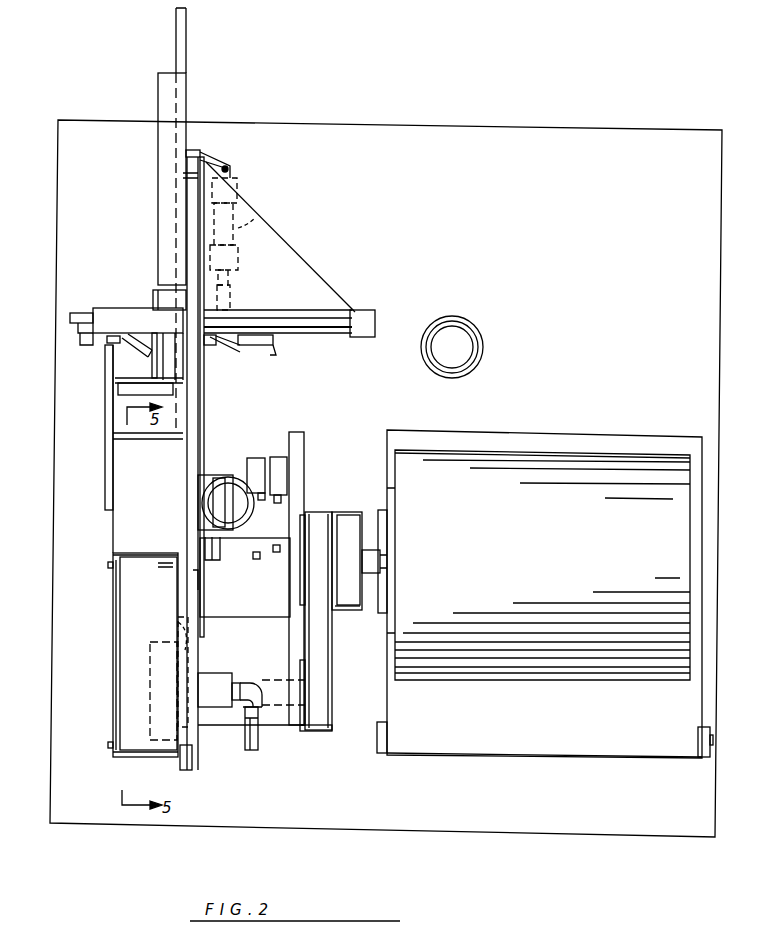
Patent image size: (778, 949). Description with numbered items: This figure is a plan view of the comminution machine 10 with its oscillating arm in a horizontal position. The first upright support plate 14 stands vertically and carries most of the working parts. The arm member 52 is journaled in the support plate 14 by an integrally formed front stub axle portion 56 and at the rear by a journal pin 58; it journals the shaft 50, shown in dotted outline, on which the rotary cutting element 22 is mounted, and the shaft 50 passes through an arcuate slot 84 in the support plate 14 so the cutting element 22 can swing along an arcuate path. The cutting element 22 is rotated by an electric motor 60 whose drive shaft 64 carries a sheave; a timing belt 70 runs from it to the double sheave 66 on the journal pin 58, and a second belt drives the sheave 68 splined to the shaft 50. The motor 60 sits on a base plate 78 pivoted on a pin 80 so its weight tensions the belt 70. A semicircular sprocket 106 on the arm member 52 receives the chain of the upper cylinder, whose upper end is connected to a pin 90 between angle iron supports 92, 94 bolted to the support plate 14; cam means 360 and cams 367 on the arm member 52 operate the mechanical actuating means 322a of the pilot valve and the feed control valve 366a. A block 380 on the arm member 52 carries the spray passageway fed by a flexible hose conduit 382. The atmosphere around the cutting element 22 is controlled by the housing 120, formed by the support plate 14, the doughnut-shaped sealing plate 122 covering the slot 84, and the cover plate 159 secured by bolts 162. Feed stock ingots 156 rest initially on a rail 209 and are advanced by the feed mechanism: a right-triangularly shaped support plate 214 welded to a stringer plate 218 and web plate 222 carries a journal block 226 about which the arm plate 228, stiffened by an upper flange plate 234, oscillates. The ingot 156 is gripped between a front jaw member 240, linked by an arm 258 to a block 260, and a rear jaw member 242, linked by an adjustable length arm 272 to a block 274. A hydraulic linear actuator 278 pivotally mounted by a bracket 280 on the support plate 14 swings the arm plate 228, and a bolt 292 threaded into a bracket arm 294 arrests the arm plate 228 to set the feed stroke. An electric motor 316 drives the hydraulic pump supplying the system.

The comminution machine 10 is at (80, 100).
The feed stock ingots 156 is at (188, 42).
The rail 209 is at (160, 163).
The first upright support plate 14 is at (192, 208).
The doughnut-shaped sealing plate 122 is at (205, 400).
The bracket 280 is at (218, 164).
The stringer plate 218 is at (236, 186).
The hydraulic linear actuator 278 is at (256, 222).
The right-triangularly shaped support plate 214 is at (302, 268).
The web plate 222 is at (318, 336).
The journal block 226 is at (365, 316).
The upper stiffening flange plate 234 is at (126, 312).
The arm plate 228 is at (85, 310).
The block 260 is at (93, 328).
The bolt 292 is at (105, 343).
The arm 258 is at (120, 352).
The front jaw member 240 is at (152, 370).
The bracket arm 294 is at (110, 437).
The rear jaw member 242 is at (206, 368).
The adjustable length arm 272 is at (226, 346).
The block 274 is at (272, 352).
The angle iron support 92 is at (212, 470).
The pin 90 is at (220, 480).
The cylinder 366a is at (258, 460).
The mechanical actuating means 322a is at (288, 470).
The journal pin 58 is at (290, 592).
The semicircular sprocket 106 is at (218, 565).
The cams 367 is at (256, 560).
The cam means 360 is at (276, 556).
The sheave 68 is at (328, 680).
The double sheave 66 is at (336, 512).
The timing belt 70 is at (342, 612).
The drive shaft 64 is at (382, 561).
The electric motor 60 is at (560, 548).
The base plate 78 is at (542, 752).
The pin 80 is at (382, 754).
The electric motor 316 is at (456, 338).
The atmospheric control housing 120 is at (104, 684).
The cover plate 159 is at (113, 660).
The bolts 162 is at (108, 565).
The rotary cutting element 22 is at (155, 660).
The arcuate slot 84 is at (180, 628).
The block 380 is at (215, 690).
The flexible hose conduit 382 is at (256, 750).
The shaft 50 is at (280, 680).
The arm member 52 is at (290, 727).
The angle iron support 94 is at (190, 560).
The front stub axle portion 56 is at (195, 578).